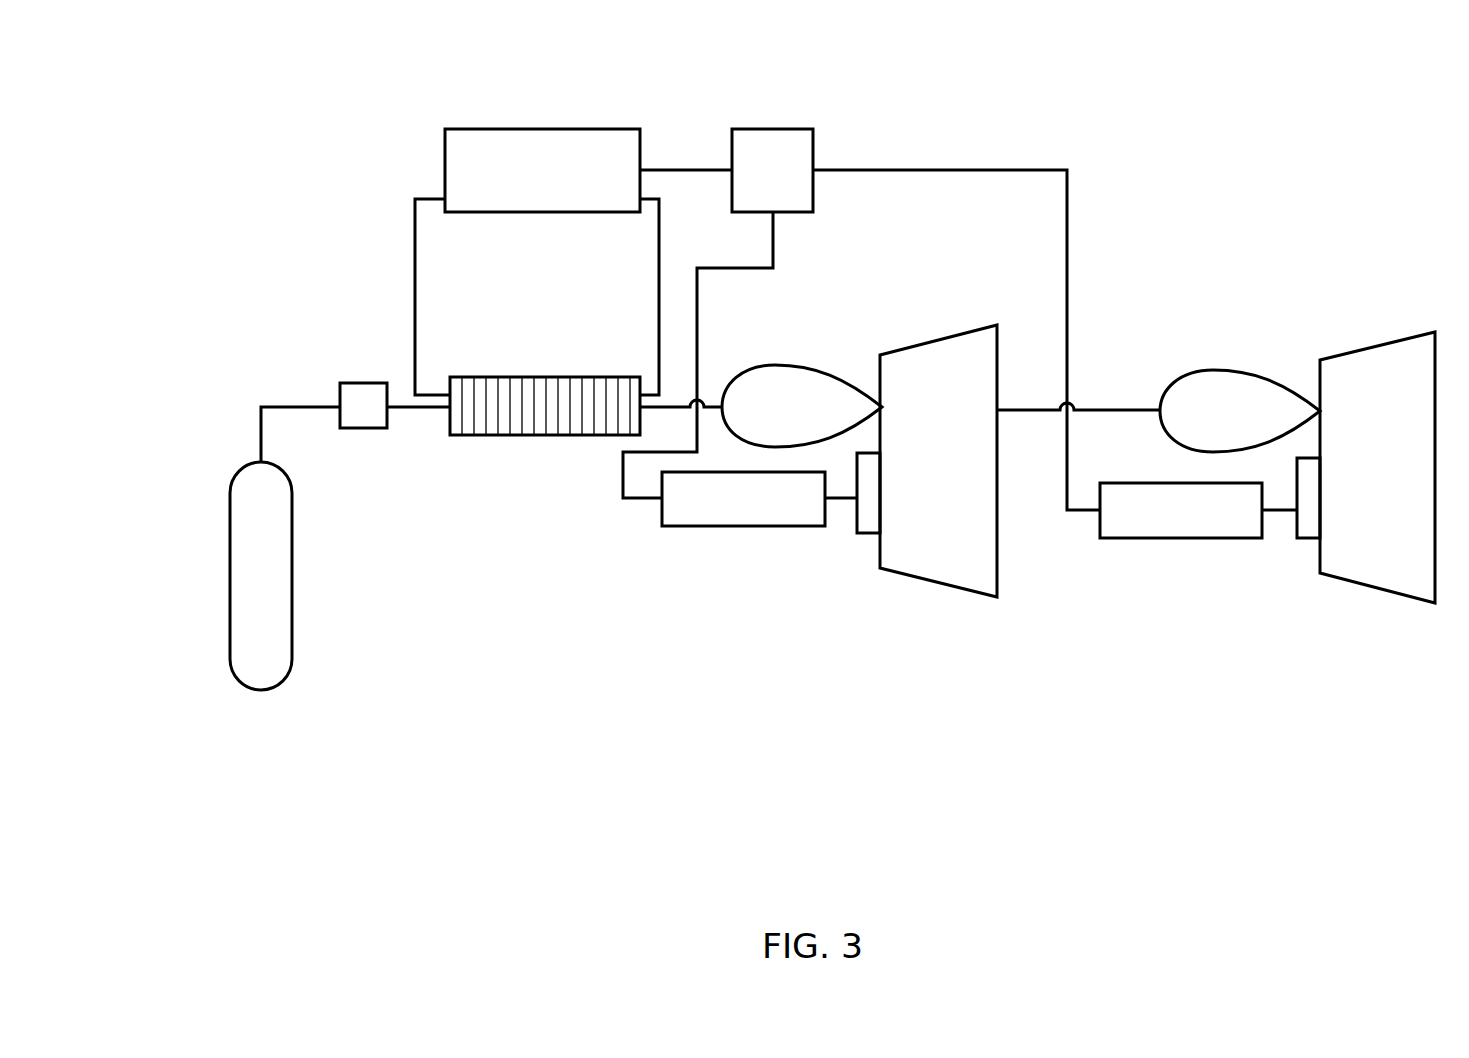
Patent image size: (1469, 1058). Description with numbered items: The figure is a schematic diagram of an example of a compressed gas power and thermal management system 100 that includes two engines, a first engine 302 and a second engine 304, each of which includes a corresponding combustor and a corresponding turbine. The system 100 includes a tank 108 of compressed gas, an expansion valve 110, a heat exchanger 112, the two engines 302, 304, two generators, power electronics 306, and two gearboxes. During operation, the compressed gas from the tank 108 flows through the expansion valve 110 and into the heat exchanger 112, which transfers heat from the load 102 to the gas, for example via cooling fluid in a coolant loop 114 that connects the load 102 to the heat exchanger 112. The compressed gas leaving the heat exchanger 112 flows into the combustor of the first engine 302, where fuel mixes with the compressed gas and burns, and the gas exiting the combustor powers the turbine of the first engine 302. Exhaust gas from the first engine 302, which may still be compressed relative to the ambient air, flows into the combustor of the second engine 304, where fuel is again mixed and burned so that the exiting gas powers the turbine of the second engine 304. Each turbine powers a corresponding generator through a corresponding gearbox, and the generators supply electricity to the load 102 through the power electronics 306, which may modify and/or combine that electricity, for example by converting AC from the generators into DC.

The compressed gas power and thermal management system 100 is at (490, 777).
The load 102 is at (558, 128).
The tank of compressed gas 108 is at (293, 634).
The expansion valve 110 is at (353, 383).
The heat exchanger 112 is at (478, 437).
The coolant loop 114 is at (411, 235).
The first engine 302 is at (882, 603).
The second engine 304 is at (1343, 615).
The power electronics 306 is at (785, 128).